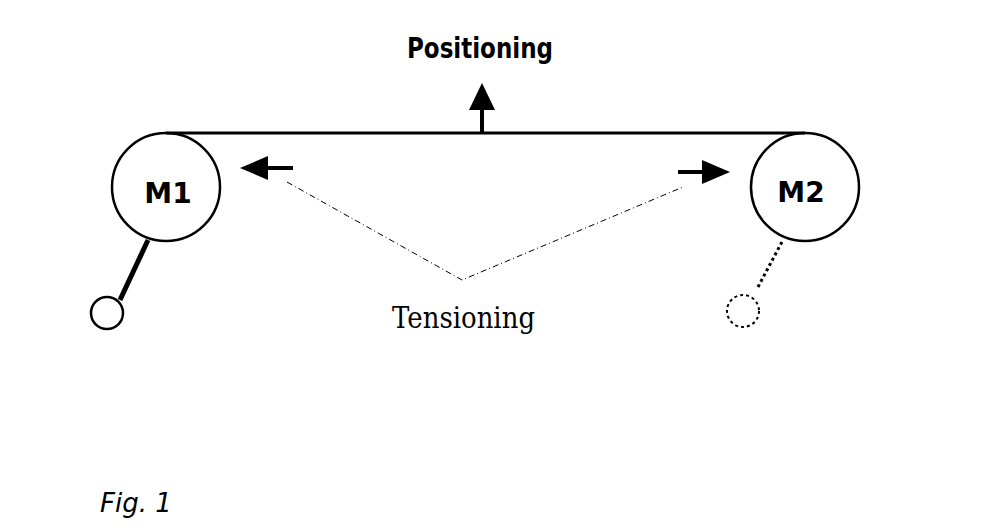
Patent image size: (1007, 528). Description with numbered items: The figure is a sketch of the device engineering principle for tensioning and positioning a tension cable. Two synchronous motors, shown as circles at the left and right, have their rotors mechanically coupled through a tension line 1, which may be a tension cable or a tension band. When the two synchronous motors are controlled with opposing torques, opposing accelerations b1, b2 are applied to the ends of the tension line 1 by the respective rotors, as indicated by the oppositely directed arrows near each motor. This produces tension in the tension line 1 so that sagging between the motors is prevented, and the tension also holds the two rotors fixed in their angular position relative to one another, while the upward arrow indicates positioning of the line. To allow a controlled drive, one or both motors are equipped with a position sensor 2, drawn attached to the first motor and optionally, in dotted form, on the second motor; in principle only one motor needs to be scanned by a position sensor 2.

The tension line 1 is at (610, 132).
The position sensor 2 is at (110, 318).
The opposing acceleration b1 is at (282, 173).
The opposing acceleration b2 is at (697, 175).